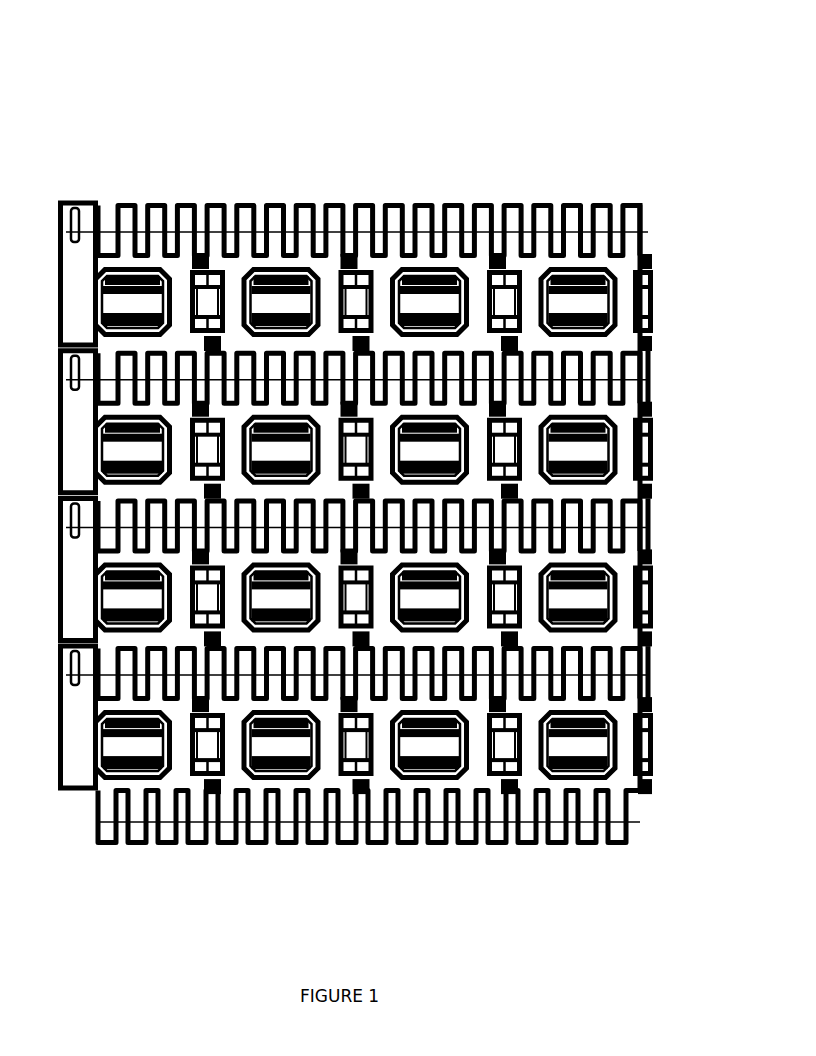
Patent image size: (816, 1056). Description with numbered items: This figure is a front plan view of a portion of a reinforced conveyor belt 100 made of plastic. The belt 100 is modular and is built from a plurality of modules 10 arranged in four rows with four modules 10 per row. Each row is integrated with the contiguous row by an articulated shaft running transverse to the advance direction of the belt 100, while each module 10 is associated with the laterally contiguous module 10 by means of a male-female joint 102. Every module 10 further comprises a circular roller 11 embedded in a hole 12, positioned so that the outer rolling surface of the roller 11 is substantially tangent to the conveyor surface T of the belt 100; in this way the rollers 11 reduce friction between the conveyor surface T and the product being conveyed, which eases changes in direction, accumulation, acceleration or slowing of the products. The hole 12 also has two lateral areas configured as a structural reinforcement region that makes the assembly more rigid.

The conveyor belt 100 is at (253, 166).
The male-female joint 102 is at (468, 208).
The circular roller 11 is at (587, 452).
The hole 12 is at (613, 480).
The module 10 is at (640, 588).
The conveyor surface T is at (95, 708).